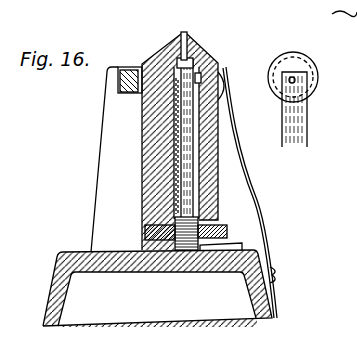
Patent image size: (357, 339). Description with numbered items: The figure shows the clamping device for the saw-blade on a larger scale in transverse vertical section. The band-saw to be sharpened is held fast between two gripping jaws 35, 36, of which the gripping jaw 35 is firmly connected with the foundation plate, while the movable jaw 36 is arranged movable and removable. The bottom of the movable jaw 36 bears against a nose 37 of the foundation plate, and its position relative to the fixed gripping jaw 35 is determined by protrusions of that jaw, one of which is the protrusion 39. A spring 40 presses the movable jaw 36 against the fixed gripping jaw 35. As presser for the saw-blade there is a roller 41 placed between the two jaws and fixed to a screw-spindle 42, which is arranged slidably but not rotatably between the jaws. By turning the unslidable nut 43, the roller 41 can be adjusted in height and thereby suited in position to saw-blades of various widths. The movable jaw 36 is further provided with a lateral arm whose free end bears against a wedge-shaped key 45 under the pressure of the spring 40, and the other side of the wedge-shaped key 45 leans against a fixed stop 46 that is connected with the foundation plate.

The gripping jaw 35 is at (163, 54).
The movable jaw 36 is at (213, 62).
The nose 37 is at (237, 243).
The protrusion 39 is at (202, 173).
The spring 40 is at (257, 210).
The roller 41 is at (193, 50).
The screw-spindle 42 is at (222, 130).
The nut 43 is at (228, 229).
The wedge-shaped key 45 is at (118, 94).
The fixed stop 46 is at (113, 82).